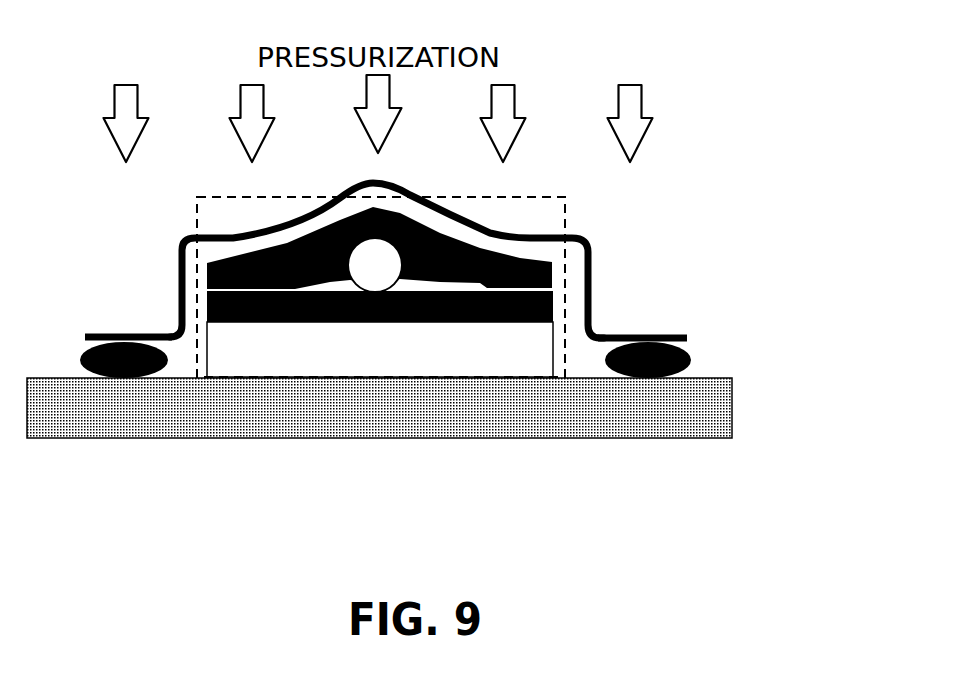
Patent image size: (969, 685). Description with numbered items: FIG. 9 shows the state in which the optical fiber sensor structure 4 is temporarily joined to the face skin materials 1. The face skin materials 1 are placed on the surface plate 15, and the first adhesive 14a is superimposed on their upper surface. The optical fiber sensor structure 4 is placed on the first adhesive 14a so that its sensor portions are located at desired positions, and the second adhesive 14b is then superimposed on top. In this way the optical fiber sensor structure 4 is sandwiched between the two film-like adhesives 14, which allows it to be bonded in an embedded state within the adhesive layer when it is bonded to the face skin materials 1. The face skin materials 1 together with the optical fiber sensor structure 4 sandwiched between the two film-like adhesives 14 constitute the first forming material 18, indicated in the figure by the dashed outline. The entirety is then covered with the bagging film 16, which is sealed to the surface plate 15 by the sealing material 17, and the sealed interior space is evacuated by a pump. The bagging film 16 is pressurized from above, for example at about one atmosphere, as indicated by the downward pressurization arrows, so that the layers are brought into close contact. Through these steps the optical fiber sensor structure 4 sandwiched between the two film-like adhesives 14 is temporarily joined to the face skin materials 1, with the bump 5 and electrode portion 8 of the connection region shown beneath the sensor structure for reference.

The face skin material 1 is at (227, 360).
The optical fiber sensor structure 4 is at (378, 416).
The bump 5 is at (375, 274).
The electrode 8 is at (313, 322).
The film-like adhesive 14 is at (721, 173).
The first adhesive 14a is at (553, 307).
The second adhesive 14b is at (552, 268).
The surface plate 15 is at (615, 423).
The bagging film 16 is at (600, 335).
The sealing material 17 is at (690, 358).
The first forming material 18 is at (197, 220).